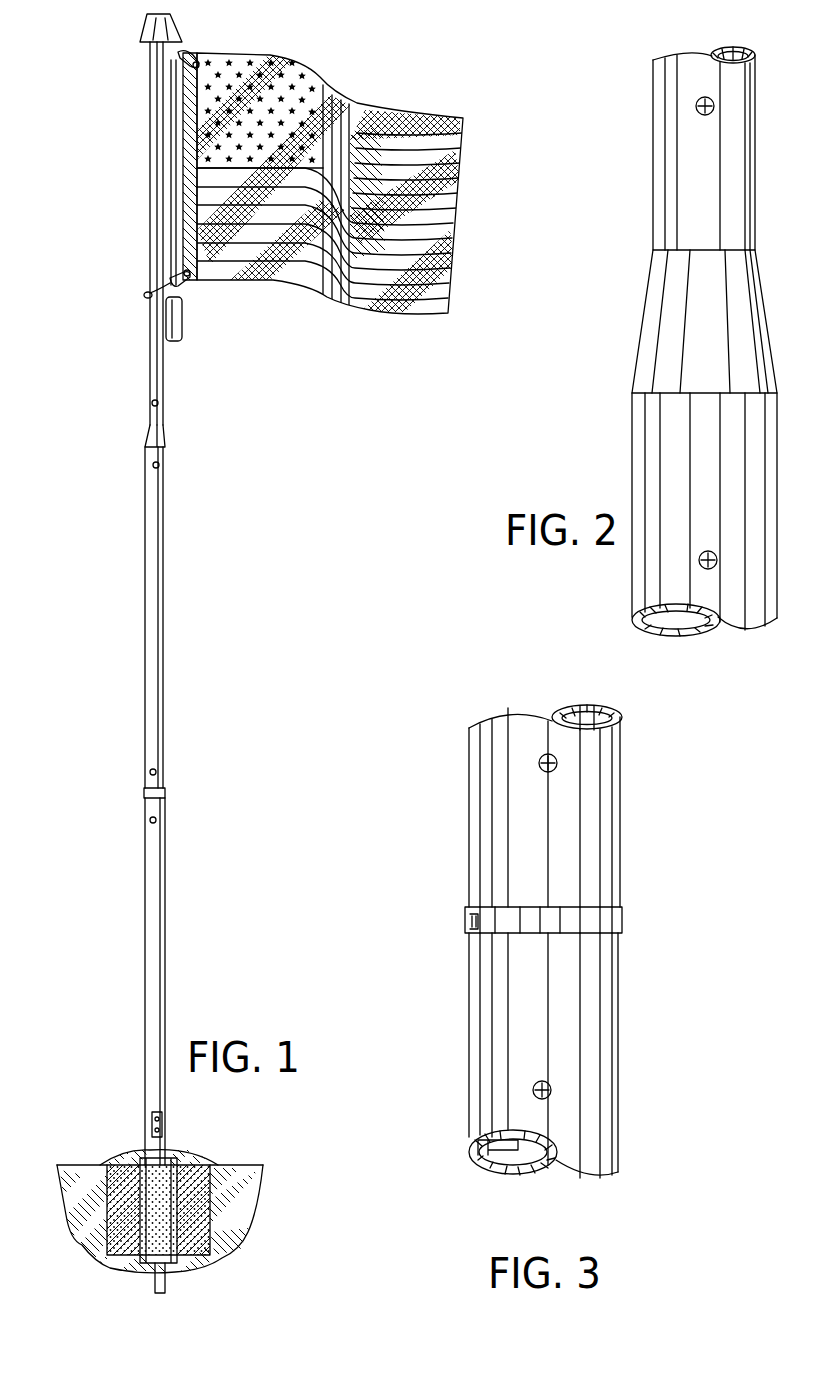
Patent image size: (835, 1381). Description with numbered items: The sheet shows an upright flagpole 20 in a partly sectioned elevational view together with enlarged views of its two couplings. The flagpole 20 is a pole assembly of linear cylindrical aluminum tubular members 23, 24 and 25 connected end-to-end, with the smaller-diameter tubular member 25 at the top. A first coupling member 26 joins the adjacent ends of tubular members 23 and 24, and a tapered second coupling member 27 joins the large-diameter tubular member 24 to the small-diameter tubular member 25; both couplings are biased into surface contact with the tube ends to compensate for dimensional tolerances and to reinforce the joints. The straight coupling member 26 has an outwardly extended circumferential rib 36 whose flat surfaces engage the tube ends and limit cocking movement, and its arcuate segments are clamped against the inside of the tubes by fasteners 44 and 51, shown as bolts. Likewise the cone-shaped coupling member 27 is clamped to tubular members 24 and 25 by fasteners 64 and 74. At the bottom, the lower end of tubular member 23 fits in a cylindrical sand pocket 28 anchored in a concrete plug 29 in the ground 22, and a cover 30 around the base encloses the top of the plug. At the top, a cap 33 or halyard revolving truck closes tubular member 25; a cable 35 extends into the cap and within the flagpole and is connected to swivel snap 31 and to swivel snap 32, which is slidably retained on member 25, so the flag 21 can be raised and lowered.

In FIG. 1, the flagpole 20 is at (106, 548).
In FIG. 1, the flag 21 is at (414, 120).
In FIG. 1, the ground 22 is at (236, 1165).
In FIG. 1, the tubular member 23 is at (158, 965).
In FIG. 3, the tubular member 23 is at (602, 1033).
In FIG. 1, the tubular member 24 is at (157, 572).
In FIG. 2, the tubular member 24 is at (768, 511).
In FIG. 3, the tubular member 24 is at (607, 810).
In FIG. 1, the tubular member 25 is at (154, 362).
In FIG. 2, the tubular member 25 is at (740, 186).
In FIG. 1, the first coupling member 26 is at (164, 794).
In FIG. 3, the first coupling member 26 is at (620, 922).
In FIG. 1, the tapered second coupling member 27 is at (163, 438).
In FIG. 2, the tapered second coupling member 27 is at (770, 323).
In FIG. 1, the sand pocket 28 is at (240, 1238).
In FIG. 1, the concrete plug 29 is at (122, 1178).
In FIG. 1, the cover 30 is at (172, 1160).
In FIG. 1, the swivel snap 31 is at (179, 62).
In FIG. 1, the swivel snap 32 is at (171, 282).
In FIG. 1, the cap 33 is at (178, 32).
In FIG. 1, the cable 35 is at (171, 176).
In FIG. 3, the circumferential rib 36 is at (471, 920).
In FIG. 1, the fastener 44 is at (150, 823).
In FIG. 3, the fastener 44 is at (533, 1092).
In FIG. 1, the fastener 51 is at (150, 774).
In FIG. 3, the fastener 51 is at (540, 770).
In FIG. 1, the fastener 64 is at (151, 466).
In FIG. 2, the fastener 64 is at (699, 562).
In FIG. 1, the fastener 74 is at (151, 407).
In FIG. 2, the fastener 74 is at (698, 114).